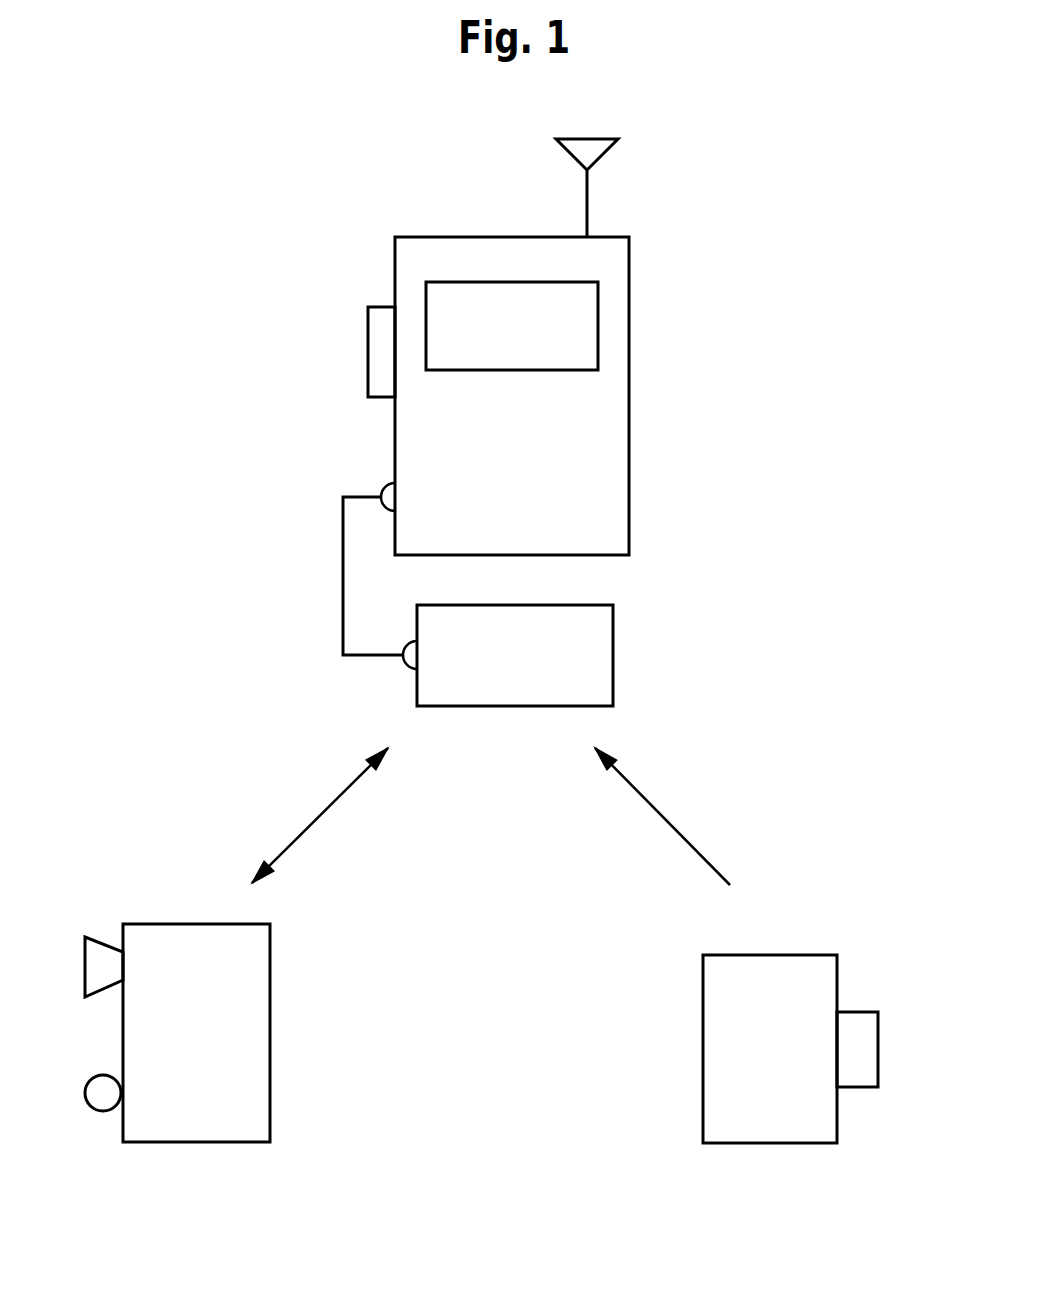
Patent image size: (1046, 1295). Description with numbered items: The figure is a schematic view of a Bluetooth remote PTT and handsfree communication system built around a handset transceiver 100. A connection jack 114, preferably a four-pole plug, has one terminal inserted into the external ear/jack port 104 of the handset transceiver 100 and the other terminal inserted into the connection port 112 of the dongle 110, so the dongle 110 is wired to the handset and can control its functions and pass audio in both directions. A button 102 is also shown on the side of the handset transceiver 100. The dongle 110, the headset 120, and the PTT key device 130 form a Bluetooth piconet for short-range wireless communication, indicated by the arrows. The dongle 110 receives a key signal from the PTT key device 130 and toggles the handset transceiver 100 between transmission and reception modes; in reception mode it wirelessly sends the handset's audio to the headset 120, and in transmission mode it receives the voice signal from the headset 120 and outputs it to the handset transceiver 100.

The handset transceiver 100 is at (629, 288).
The PTT button of handset transceiver 102 is at (368, 309).
The external ear/jack port 104 is at (383, 487).
The dongle 110 is at (613, 652).
The connection port 112 is at (403, 668).
The connection jack 114 is at (343, 623).
The headset 120 is at (270, 1073).
The PTT key device 130 is at (808, 955).